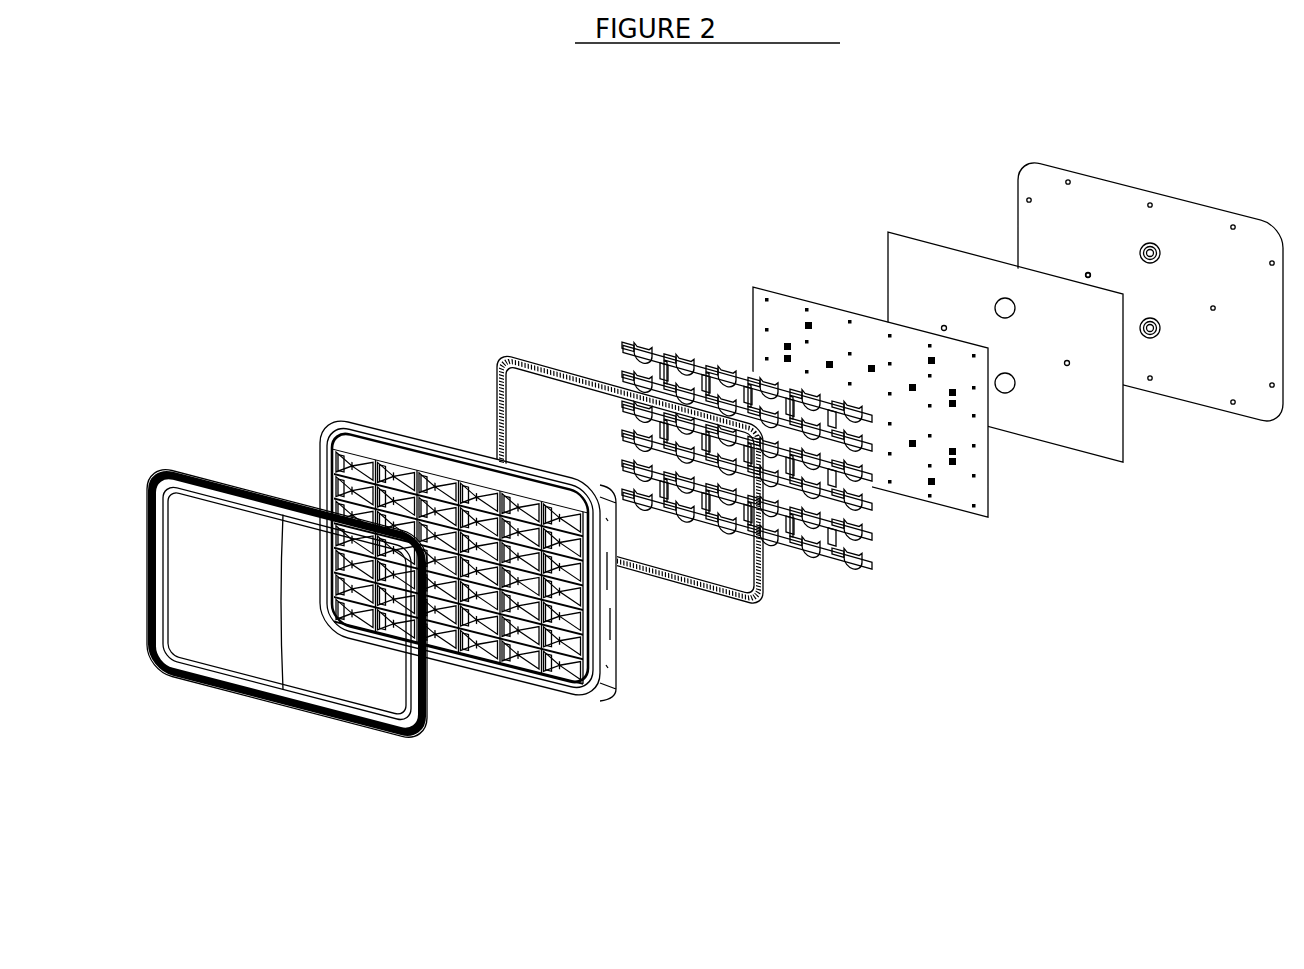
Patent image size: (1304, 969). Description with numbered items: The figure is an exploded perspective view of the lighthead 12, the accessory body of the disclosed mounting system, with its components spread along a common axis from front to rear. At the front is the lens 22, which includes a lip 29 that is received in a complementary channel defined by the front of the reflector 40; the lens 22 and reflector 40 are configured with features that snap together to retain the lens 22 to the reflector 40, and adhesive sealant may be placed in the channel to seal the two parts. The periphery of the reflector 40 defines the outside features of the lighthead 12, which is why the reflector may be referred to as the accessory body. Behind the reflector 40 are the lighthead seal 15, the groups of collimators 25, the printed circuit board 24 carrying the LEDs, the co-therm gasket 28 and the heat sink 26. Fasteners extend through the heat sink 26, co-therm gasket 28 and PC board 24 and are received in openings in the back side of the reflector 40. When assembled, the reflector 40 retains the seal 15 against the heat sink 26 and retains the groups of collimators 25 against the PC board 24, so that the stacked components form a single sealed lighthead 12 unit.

The lighthead 12 is at (415, 212).
The lens 22 is at (395, 768).
The lip 29 is at (430, 727).
The reflector 40 is at (575, 735).
The lighthead seal 15 is at (741, 640).
The groups of collimators 25 is at (858, 590).
The printed circuit (PC) board 24 is at (975, 541).
The co-therm gasket 28 is at (1102, 488).
The heat sink 26 is at (1242, 445).